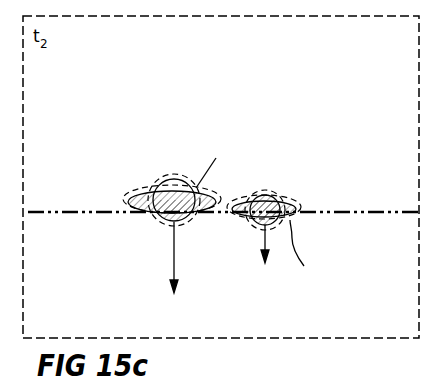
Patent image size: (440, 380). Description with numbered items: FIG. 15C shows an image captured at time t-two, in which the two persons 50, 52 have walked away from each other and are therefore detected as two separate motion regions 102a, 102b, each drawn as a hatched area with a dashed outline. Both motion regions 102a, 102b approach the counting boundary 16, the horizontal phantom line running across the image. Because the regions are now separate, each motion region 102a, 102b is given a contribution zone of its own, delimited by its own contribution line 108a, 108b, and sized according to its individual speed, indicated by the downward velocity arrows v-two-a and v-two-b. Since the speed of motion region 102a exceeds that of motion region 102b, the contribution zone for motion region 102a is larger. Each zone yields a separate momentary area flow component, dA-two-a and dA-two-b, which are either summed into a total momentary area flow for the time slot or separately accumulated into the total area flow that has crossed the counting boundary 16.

The counting boundary 16 is at (350, 211).
The person 50 is at (164, 206).
The person 52 is at (287, 202).
The motion region 102a is at (158, 178).
The motion region 102b is at (266, 194).
The contribution line 108a is at (125, 195).
The contribution line 108b is at (302, 202).